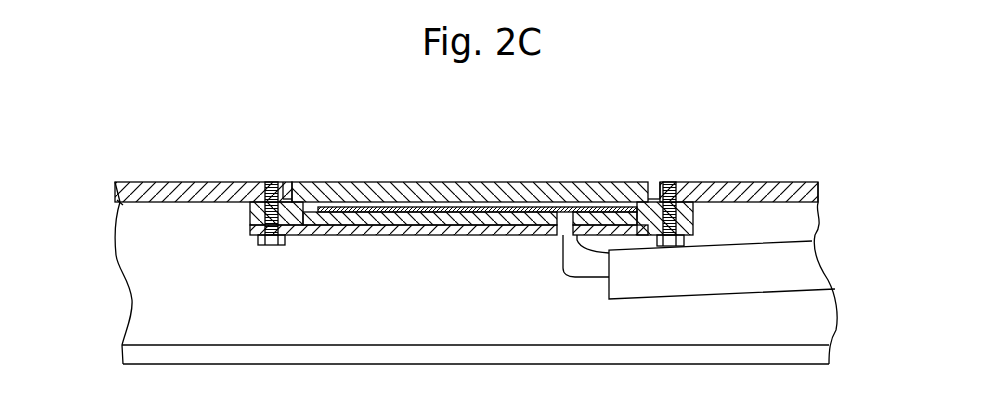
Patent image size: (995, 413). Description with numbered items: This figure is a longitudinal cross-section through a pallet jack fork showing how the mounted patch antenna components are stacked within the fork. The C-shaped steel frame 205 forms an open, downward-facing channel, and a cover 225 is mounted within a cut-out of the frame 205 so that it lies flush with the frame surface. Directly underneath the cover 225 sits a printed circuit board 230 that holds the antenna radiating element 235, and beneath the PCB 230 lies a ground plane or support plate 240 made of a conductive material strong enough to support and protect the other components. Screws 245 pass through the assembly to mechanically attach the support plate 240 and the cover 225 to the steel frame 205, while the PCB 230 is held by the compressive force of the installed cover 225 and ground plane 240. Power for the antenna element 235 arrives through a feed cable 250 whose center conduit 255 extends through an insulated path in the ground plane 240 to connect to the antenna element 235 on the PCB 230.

The steel frame 205 is at (180, 172).
The cover 225 is at (422, 172).
The printed circuit board 230 is at (636, 200).
The antenna element 235 is at (592, 196).
The ground plane/support plate 240 is at (350, 248).
The screws 245 is at (671, 181).
The feed cable 250 is at (593, 295).
The center conduit 255 is at (545, 267).